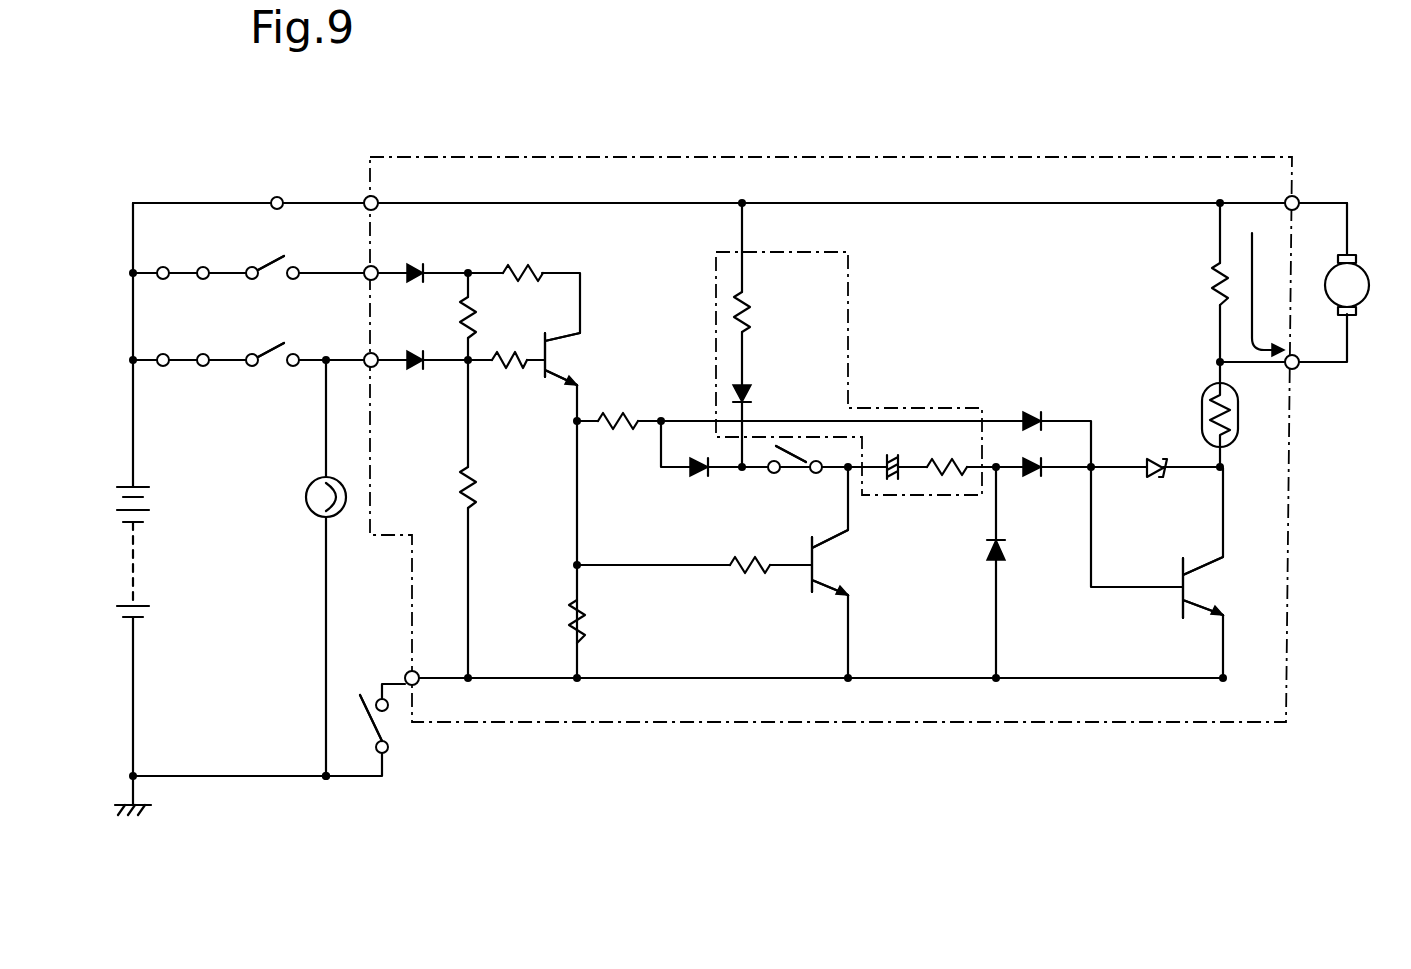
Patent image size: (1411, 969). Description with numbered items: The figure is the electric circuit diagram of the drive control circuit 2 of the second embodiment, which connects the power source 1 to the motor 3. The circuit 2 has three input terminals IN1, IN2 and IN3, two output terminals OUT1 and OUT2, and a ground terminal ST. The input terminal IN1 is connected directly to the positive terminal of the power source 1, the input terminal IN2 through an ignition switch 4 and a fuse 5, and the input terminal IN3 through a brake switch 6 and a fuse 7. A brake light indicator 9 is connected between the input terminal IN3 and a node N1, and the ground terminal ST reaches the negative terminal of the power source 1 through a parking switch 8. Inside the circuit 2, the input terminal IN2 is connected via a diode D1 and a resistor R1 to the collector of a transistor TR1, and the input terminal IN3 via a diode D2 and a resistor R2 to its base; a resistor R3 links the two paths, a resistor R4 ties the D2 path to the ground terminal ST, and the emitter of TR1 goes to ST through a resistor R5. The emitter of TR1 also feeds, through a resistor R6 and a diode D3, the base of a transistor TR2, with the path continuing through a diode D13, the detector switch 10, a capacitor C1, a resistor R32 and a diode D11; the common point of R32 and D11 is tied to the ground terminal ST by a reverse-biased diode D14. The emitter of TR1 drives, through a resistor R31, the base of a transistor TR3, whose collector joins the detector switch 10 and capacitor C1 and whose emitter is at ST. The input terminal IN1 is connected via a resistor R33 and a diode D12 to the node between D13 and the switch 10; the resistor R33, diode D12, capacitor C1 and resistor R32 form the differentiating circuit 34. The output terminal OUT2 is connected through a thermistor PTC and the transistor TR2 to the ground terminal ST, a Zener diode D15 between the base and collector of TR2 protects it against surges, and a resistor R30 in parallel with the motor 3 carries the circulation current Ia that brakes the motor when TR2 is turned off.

The drive control circuit 2 is at (690, 157).
The power source 1 is at (140, 500).
The motor 3 is at (1370, 280).
The ignition switch 4 is at (283, 261).
The fuse 5 is at (183, 273).
The brake switch 6 is at (283, 347).
The fuse 7 is at (183, 360).
The parking switch 8 is at (372, 729).
The brake light indicator 9 is at (308, 507).
The detector switch 10 is at (790, 470).
The differentiating circuit 34 is at (870, 408).
The input terminal IN1 is at (371, 200).
The input terminal IN2 is at (371, 268).
The input terminal IN3 is at (371, 355).
The output terminal OUT1 is at (1299, 200).
The output terminal OUT2 is at (1299, 368).
The ground terminal ST is at (408, 674).
The node N1 is at (324, 775).
The diode D1 is at (418, 268).
The diode D2 is at (418, 365).
The diode D3 is at (1032, 419).
The diode D11 is at (1032, 472).
The diode D12 is at (753, 392).
The diode D13 is at (700, 472).
The diode D14 is at (990, 552).
The Zener diode D15 is at (1160, 472).
The resistor R1 is at (523, 265).
The resistor R2 is at (513, 352).
The resistor R3 is at (466, 318).
The resistor R4 is at (466, 490).
The resistor R5 is at (575, 620).
The resistor R6 is at (620, 416).
The resistor R30 is at (1218, 284).
The resistor R31 is at (750, 572).
The resistor R32 is at (975, 440).
The resistor R33 is at (752, 312).
The capacitor C1 is at (900, 440).
The transistor TR1 is at (550, 382).
The transistor TR2 is at (1180, 610).
The transistor TR3 is at (825, 596).
The thermistor PTC is at (1202, 412).
The circulation current Ia is at (1268, 294).